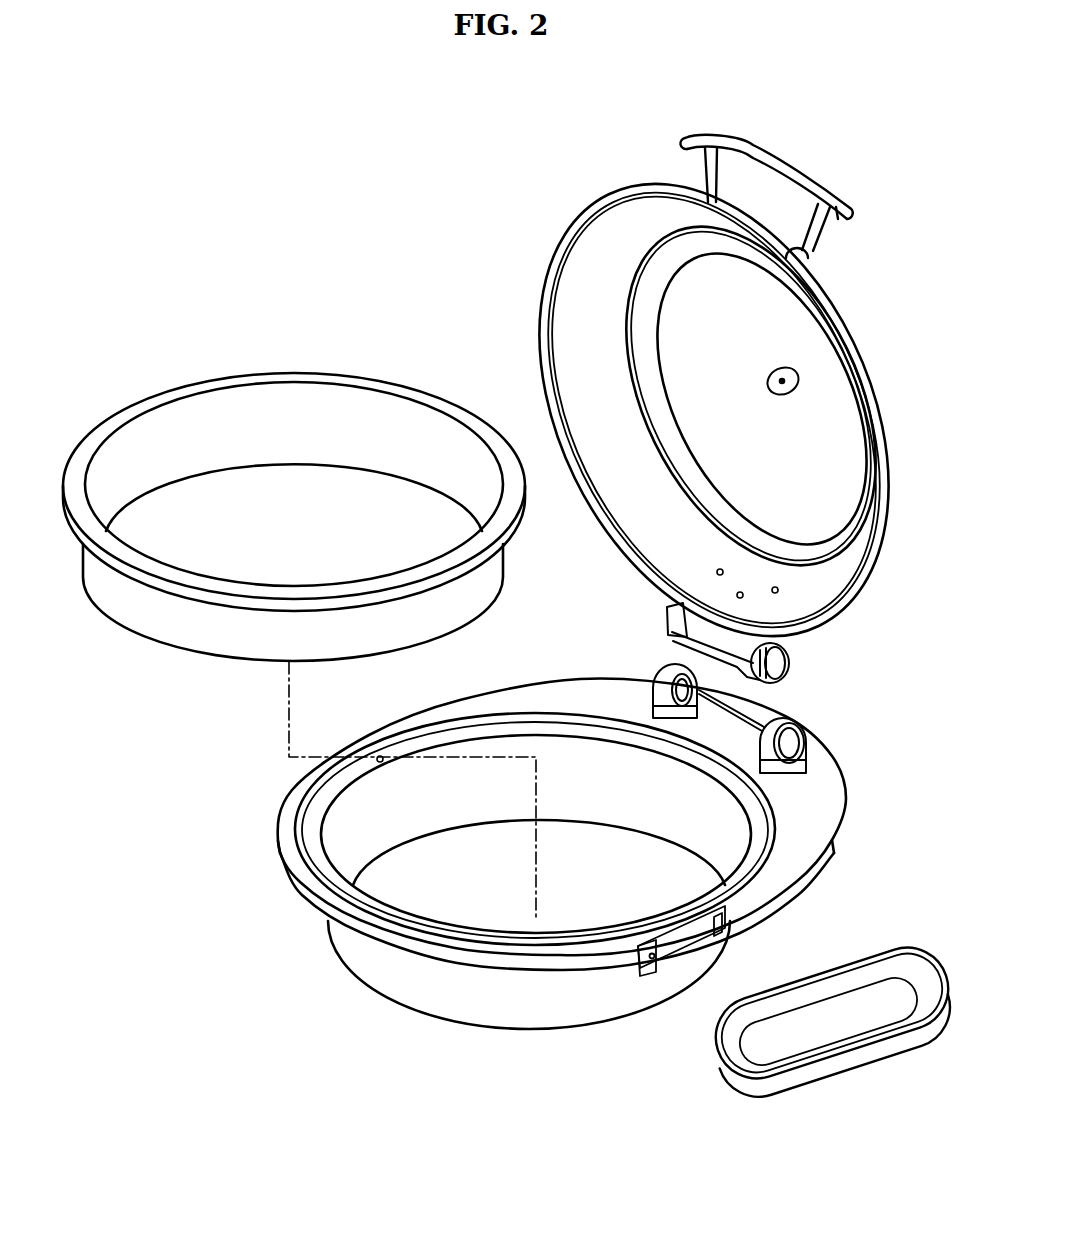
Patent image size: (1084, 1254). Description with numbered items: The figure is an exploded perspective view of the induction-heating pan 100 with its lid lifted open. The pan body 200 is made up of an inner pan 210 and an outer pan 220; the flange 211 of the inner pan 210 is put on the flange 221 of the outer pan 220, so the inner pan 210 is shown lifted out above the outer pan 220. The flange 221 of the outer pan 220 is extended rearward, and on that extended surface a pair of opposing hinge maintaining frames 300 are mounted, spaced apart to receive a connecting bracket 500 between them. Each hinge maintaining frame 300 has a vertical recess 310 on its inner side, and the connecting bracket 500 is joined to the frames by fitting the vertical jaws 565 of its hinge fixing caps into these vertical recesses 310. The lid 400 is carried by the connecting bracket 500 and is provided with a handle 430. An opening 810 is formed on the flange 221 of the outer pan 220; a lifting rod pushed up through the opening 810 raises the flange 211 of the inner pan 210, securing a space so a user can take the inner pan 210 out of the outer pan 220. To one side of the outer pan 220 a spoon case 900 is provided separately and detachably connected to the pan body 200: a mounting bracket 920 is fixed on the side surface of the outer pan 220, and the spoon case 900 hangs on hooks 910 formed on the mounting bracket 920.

The induction-heating pan 100 is at (300, 287).
The pan body 200 is at (396, 1010).
The inner pan 210 is at (195, 405).
The flange 211 is at (390, 386).
The outer pan 220 is at (357, 965).
The flange 221 is at (312, 818).
The hinge maintaining frame 300 is at (658, 663).
The vertical recess 310 is at (702, 690).
The lid 400 is at (557, 240).
The handle 430 is at (778, 162).
The connecting bracket 500 is at (793, 652).
The vertical jaw 565 is at (774, 678).
The opening 810 is at (378, 756).
The spoon case 900 is at (860, 950).
The hook 910 is at (655, 978).
The mounting bracket 920 is at (680, 950).